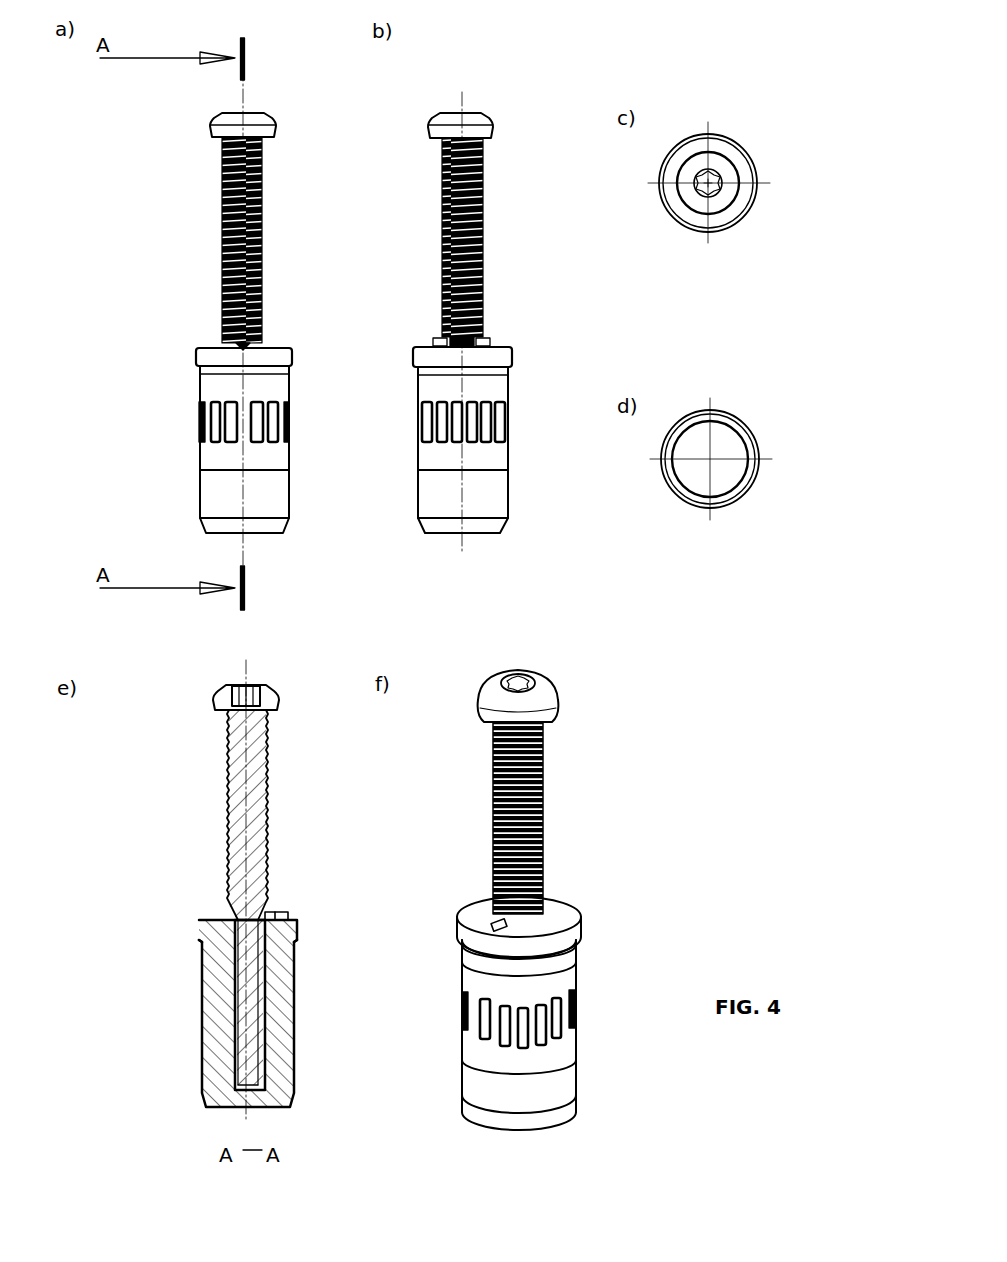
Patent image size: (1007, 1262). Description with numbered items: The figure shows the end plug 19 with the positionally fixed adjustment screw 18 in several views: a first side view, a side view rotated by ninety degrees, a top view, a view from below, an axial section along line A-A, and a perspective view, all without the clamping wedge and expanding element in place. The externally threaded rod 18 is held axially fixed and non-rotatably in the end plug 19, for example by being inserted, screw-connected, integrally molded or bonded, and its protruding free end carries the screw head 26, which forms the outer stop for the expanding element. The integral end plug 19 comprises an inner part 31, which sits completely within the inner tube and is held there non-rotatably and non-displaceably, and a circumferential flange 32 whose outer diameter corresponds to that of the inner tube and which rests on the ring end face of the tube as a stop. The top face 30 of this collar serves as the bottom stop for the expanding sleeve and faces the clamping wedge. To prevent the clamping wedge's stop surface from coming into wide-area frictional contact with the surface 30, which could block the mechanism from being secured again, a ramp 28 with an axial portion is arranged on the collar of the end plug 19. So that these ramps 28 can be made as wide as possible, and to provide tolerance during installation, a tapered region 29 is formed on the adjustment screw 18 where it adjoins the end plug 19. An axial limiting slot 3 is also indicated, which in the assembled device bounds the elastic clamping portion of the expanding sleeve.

The externally threaded rod 18 is at (262, 200).
The end plug 19 is at (265, 384).
The screw head 26 is at (258, 123).
The ramp on the collar of the end plug 28 is at (250, 347).
The tapered region of the adjustment screw 29 is at (232, 345).
The top face of the collar of the end plug 30 is at (280, 349).
The inner part of the end plug 31 is at (226, 1036).
The circumferential flange 32 is at (206, 359).
The axial limiting slot 3 is at (288, 920).